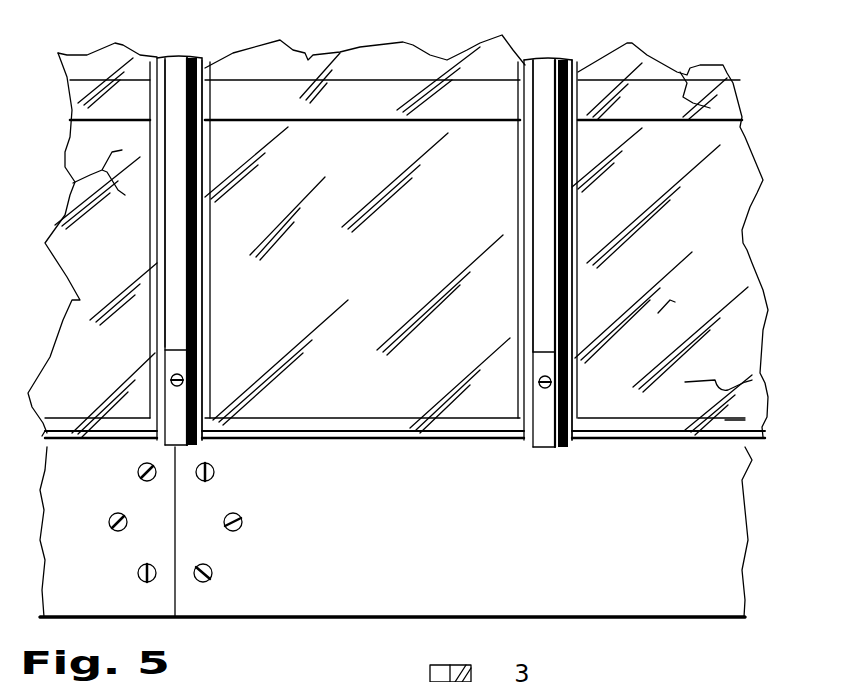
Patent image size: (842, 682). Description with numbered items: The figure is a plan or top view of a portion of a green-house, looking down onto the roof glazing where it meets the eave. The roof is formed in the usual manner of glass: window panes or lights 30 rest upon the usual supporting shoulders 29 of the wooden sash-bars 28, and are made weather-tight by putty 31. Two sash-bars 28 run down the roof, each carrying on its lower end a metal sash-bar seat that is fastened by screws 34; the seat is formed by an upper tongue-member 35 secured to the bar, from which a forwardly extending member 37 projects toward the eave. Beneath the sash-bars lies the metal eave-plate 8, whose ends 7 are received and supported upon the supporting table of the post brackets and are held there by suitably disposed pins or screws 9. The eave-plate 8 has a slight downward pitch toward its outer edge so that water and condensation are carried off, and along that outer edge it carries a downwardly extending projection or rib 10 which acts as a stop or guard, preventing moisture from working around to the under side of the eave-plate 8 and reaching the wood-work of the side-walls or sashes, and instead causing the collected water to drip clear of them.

The end of eave-plate 7 is at (159, 605).
The eave-plate 8 is at (48, 530).
The pins or screws 9 is at (214, 470).
The downwardly extending projection or rib 10 is at (613, 612).
The sash-bar 28 is at (182, 66).
The supporting shoulders 29 is at (205, 242).
The window panes or lights 30 is at (100, 62).
The putty 31 is at (205, 229).
The screws 34 is at (180, 376).
The upper tongue-member 35 is at (182, 398).
The forwardly extending member 37 is at (170, 446).